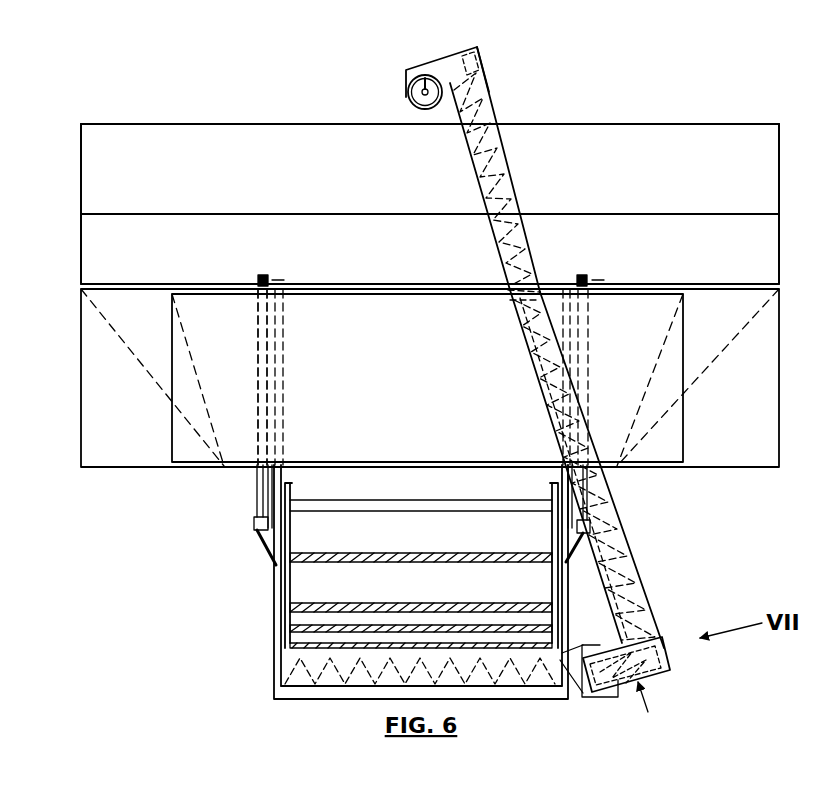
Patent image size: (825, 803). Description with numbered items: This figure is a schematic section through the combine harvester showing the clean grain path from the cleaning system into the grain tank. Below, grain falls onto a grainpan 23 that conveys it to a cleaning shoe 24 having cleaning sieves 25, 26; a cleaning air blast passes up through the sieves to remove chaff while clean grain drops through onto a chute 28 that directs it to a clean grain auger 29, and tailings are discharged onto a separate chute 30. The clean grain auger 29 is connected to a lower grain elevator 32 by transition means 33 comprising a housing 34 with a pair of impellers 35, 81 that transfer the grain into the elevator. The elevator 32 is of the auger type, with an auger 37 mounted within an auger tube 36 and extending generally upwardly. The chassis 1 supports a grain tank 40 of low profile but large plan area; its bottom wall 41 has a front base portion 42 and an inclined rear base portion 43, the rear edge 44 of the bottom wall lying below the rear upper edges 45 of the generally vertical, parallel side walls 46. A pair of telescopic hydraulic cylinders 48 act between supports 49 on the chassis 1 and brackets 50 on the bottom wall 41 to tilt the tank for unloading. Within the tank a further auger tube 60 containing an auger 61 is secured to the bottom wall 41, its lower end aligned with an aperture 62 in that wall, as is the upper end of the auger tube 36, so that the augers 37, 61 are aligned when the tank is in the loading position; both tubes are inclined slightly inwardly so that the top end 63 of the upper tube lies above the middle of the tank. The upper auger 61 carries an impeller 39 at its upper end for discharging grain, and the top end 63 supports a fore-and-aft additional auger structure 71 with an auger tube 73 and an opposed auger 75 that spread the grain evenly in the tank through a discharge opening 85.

The chassis 1 is at (273, 623).
The grainpan 23 is at (423, 494).
The cleaning shoe 24 is at (254, 584).
The cleaning sieve 25 is at (410, 553).
The cleaning sieve 26 is at (410, 603).
The chute 28 is at (455, 626).
The clean grain auger 29 is at (520, 681).
The chute 30 is at (483, 656).
The lower grain elevator 32 is at (635, 549).
The transition means 33 is at (652, 709).
The housing 34 is at (663, 674).
The impeller 35 is at (604, 697).
The auger tube 36 is at (647, 586).
The auger 37 is at (640, 613).
The impeller 39 is at (470, 63).
The grain tank 40 is at (81, 258).
The bottom wall 41 is at (248, 290).
The front base portion 42 is at (216, 289).
The rear base portion 43 is at (422, 351).
The rear edge 44 is at (352, 215).
The rear upper edges 45 is at (82, 124).
The side walls 46 is at (81, 183).
The telescopic hydraulic cylinders 48 is at (257, 478).
The supports 49 is at (262, 547).
The brackets 50 is at (258, 277).
The auger tube 60 is at (517, 178).
The auger 61 is at (515, 204).
The aperture 62 is at (541, 292).
The top end 63 is at (497, 67).
The additional auger structure 71 is at (407, 92).
The auger tube 73 is at (420, 110).
The auger 75 is at (412, 102).
The impeller 81 is at (622, 645).
The discharge opening 85 is at (433, 113).